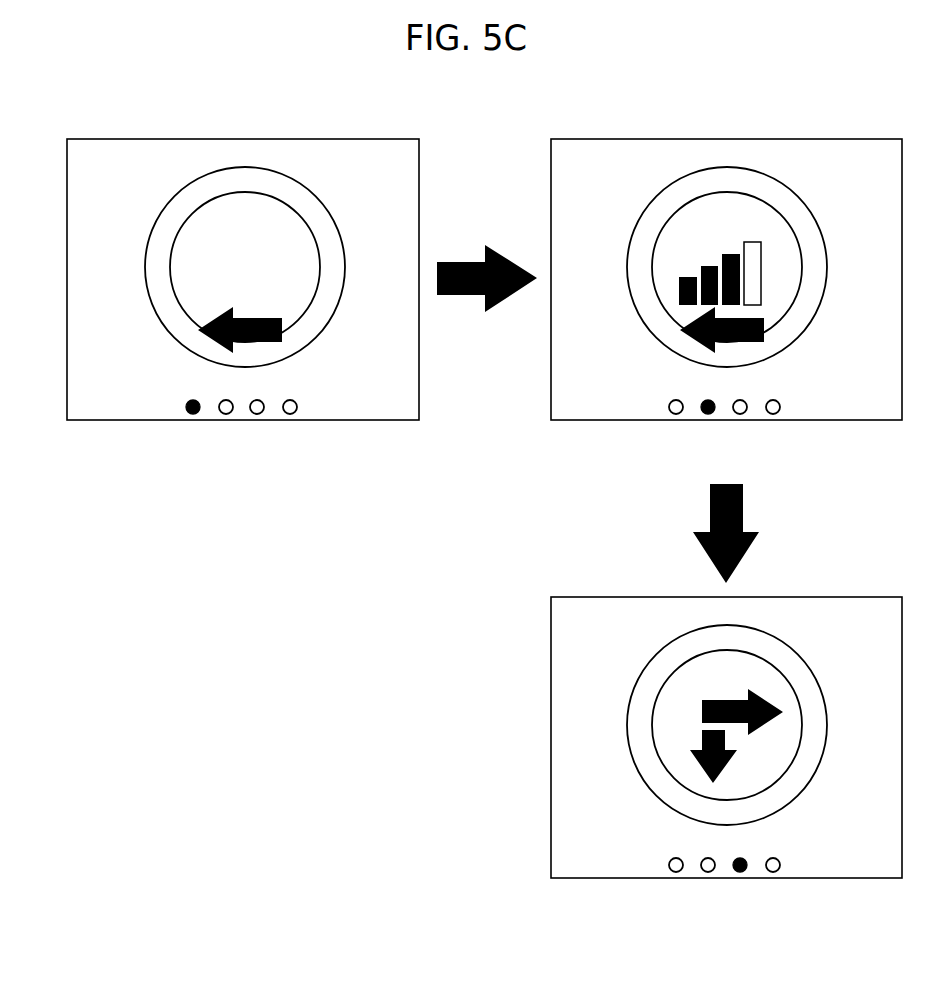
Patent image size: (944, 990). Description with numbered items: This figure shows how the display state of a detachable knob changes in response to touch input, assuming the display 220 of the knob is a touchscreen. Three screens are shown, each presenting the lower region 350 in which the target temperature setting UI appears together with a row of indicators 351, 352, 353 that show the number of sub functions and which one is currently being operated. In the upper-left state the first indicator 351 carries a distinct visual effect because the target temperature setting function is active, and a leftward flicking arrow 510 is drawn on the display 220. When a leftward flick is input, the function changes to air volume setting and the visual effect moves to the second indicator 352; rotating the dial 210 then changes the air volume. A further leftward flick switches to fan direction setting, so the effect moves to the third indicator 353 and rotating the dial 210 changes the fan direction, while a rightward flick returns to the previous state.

The dial 210 is at (248, 178).
The display 220 is at (190, 298).
The lower region 350 is at (95, 412).
The first indicator 351 is at (193, 415).
The second indicator 352 is at (708, 415).
The third indicator 353 is at (740, 873).
The direction indicator arrow 510 is at (272, 342).